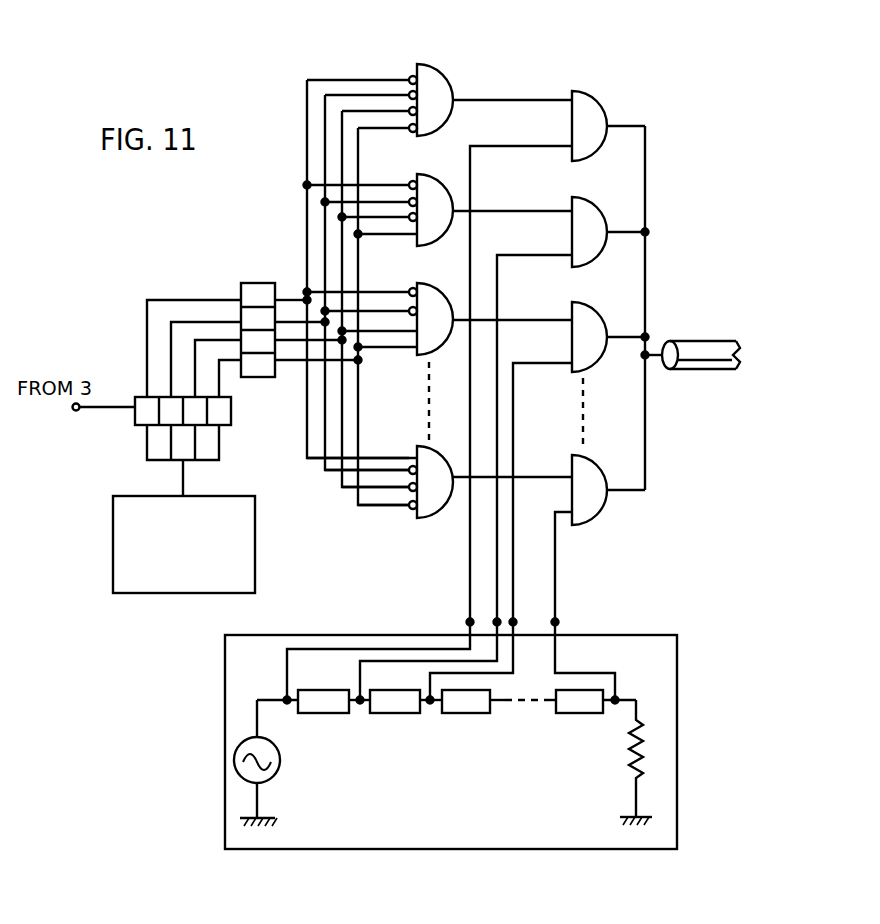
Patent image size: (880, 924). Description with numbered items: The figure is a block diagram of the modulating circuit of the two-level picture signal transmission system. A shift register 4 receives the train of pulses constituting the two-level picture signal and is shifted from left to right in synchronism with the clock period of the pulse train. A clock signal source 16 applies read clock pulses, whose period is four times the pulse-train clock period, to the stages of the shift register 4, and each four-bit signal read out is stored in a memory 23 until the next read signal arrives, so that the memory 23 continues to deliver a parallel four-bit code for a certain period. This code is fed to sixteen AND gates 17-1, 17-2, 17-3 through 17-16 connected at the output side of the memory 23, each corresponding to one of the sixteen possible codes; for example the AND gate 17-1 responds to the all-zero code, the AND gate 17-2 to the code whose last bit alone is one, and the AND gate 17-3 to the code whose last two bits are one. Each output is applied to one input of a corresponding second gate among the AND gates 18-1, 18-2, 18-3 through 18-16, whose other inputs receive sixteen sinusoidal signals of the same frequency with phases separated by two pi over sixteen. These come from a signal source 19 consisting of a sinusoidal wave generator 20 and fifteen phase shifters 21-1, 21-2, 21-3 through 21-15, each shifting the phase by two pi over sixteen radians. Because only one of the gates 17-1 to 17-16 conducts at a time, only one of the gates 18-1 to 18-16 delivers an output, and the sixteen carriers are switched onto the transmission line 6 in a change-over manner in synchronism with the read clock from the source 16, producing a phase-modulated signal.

The shift register 4 is at (231, 405).
The transmission line 6 is at (682, 340).
The clock signal source 16 is at (255, 513).
The AND gate 17-1 is at (440, 64).
The AND gate 17-2 is at (446, 162).
The AND gate 17-3 is at (446, 271).
The AND gate 17-16 is at (437, 517).
The AND gate 18-1 is at (590, 91).
The AND gate 18-2 is at (590, 197).
The AND gate 18-3 is at (590, 302).
The AND gate 18-16 is at (596, 525).
The signal source 19 is at (470, 735).
The sinusoidal wave generator 20 is at (280, 764).
The phase shifter 21-1 is at (330, 713).
The phase shifter 21-2 is at (393, 713).
The phase shifter 21-3 is at (465, 713).
The phase shifter 21-15 is at (584, 719).
The memory 23 is at (265, 283).